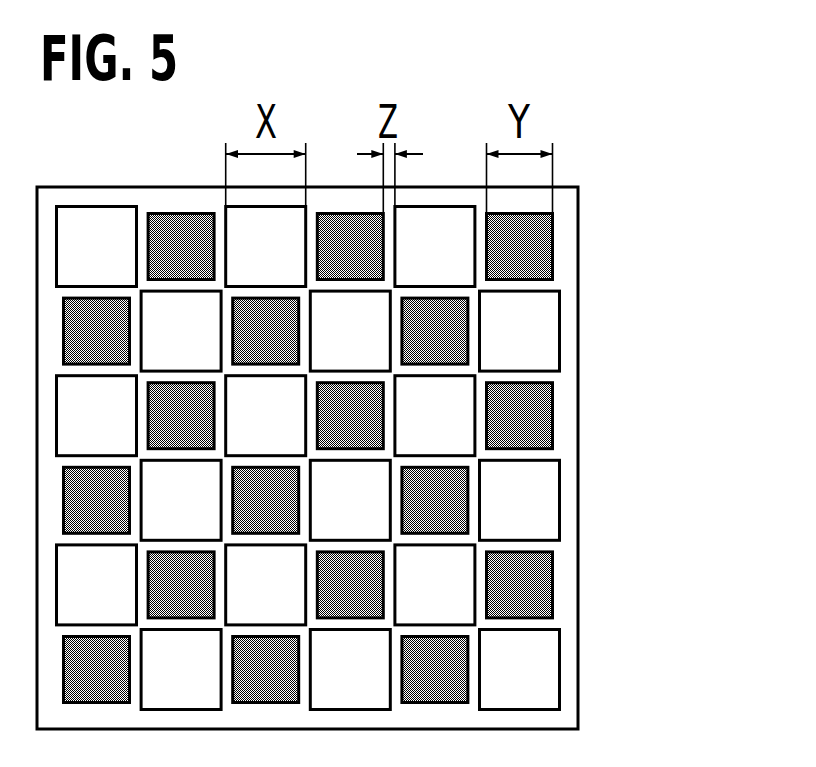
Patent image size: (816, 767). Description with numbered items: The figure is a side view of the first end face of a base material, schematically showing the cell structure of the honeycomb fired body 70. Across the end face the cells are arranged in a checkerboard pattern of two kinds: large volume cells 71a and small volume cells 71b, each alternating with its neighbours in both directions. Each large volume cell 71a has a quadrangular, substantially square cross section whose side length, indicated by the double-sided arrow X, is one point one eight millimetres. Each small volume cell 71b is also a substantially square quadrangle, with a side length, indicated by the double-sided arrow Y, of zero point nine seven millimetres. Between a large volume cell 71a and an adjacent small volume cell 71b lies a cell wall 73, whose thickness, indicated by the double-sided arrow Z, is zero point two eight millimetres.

The honeycomb fired body 70 is at (640, 212).
The large volume cell 71a is at (545, 507).
The small volume cell 71b is at (540, 410).
The cell wall 73 is at (540, 455).